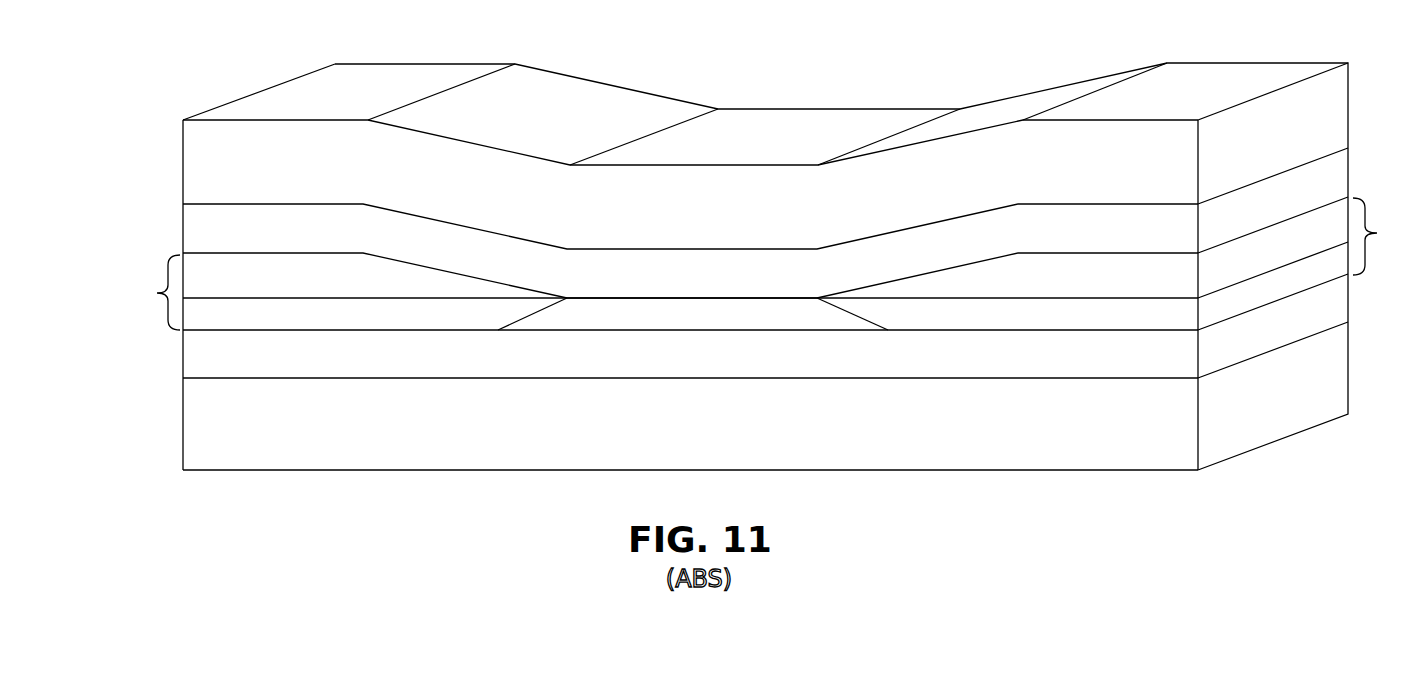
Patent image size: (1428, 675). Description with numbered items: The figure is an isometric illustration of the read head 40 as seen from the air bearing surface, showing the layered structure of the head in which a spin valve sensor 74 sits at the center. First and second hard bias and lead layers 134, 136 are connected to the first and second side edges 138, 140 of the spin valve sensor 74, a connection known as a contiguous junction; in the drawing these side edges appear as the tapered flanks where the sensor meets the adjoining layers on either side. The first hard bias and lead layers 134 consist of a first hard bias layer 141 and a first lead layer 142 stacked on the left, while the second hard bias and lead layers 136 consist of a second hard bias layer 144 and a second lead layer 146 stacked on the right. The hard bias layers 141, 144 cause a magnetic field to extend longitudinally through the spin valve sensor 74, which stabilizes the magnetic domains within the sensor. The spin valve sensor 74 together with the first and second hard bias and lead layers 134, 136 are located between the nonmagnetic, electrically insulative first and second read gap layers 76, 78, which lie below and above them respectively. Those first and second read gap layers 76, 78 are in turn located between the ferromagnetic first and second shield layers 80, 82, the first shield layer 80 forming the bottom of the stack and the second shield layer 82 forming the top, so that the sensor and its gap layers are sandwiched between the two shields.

The read head 40 is at (845, 75).
The spin valve sensor 74 is at (602, 288).
The first read gap layer 76 is at (872, 362).
The second read gap layer 78 is at (428, 235).
The first shield layer 80 is at (342, 455).
The second shield layer 82 is at (623, 97).
The first hard bias and lead layers 134 is at (143, 292).
The second hard bias and lead layers 136 is at (1388, 236).
The first side edge 138 is at (518, 318).
The second side edge 140 is at (867, 318).
The first hard bias layer 141 is at (227, 315).
The first lead layer 142 is at (227, 267).
The second hard bias layer 144 is at (1147, 315).
The second lead layer 146 is at (1147, 267).